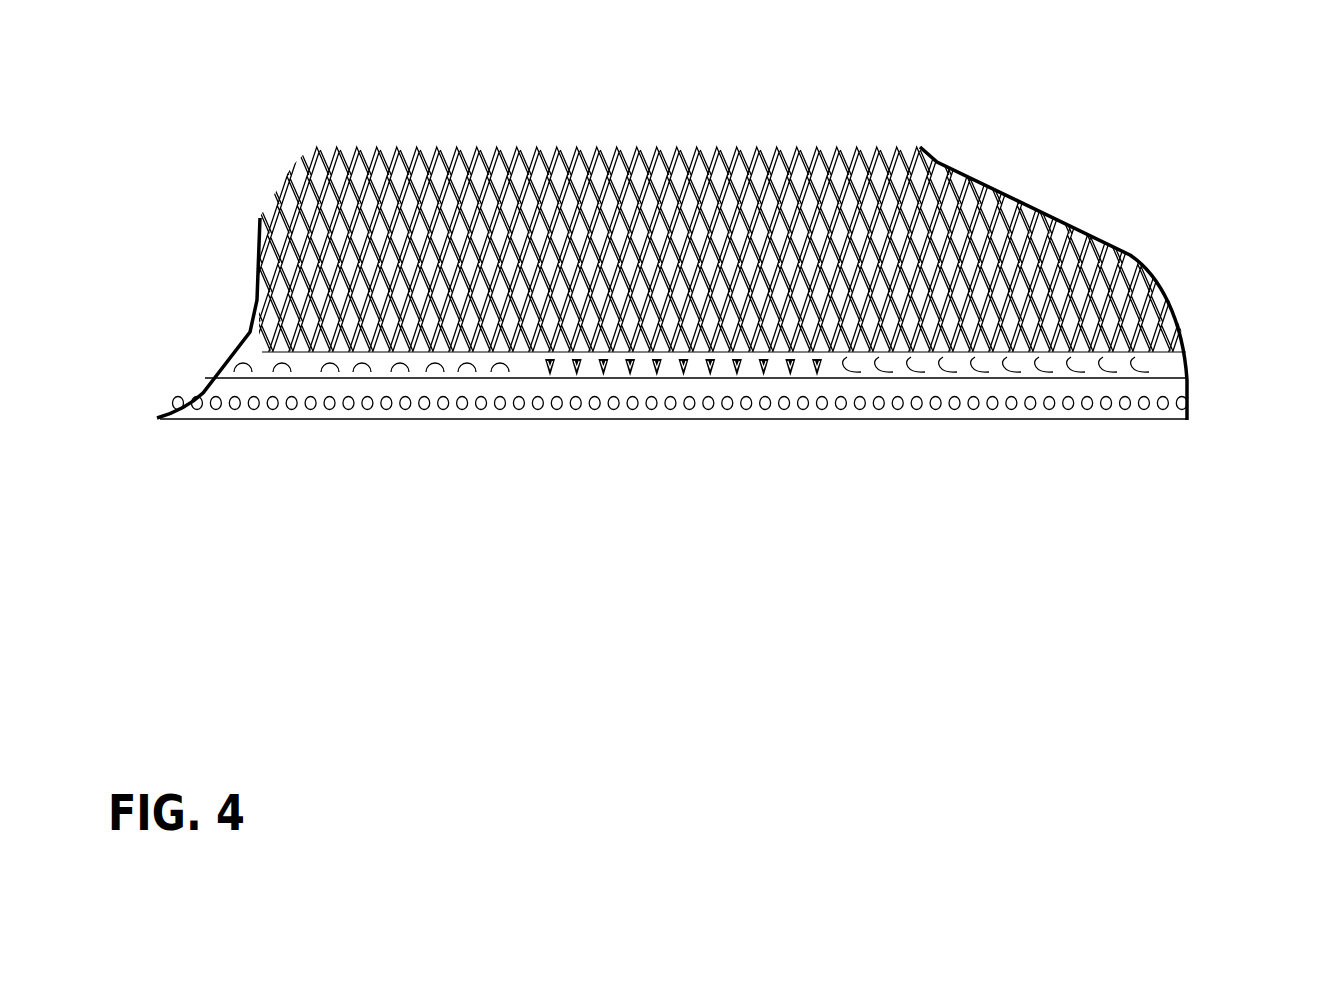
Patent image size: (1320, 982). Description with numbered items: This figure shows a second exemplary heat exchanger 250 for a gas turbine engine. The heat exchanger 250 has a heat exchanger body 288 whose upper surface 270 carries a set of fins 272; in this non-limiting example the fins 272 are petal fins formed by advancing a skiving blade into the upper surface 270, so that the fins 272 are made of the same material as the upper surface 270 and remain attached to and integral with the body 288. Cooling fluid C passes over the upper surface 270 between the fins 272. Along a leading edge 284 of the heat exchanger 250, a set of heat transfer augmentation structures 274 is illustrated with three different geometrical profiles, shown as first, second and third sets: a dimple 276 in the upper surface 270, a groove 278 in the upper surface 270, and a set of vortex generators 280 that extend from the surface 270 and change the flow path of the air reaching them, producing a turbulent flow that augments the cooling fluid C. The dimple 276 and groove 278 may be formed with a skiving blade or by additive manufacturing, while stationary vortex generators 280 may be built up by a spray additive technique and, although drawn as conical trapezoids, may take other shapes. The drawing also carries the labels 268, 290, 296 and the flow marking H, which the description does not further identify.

The heat exchanger 250 is at (262, 63).
The set of fins 272 is at (293, 220).
The heat exchanger body 288 is at (232, 368).
The air outlet flow 296 is at (1166, 363).
The base plate 268 is at (285, 420).
The leading edge 284 is at (569, 379).
The coolant tubes 290 is at (422, 409).
The upper surface 270 is at (347, 367).
The dimple 276 is at (500, 377).
The set of vortex generators 280 is at (607, 362).
The groove 278 is at (905, 360).
The set of heat transfer augmentation structures 274 is at (1030, 360).
The hot side H is at (744, 426).
The cooling fluid C is at (836, 332).